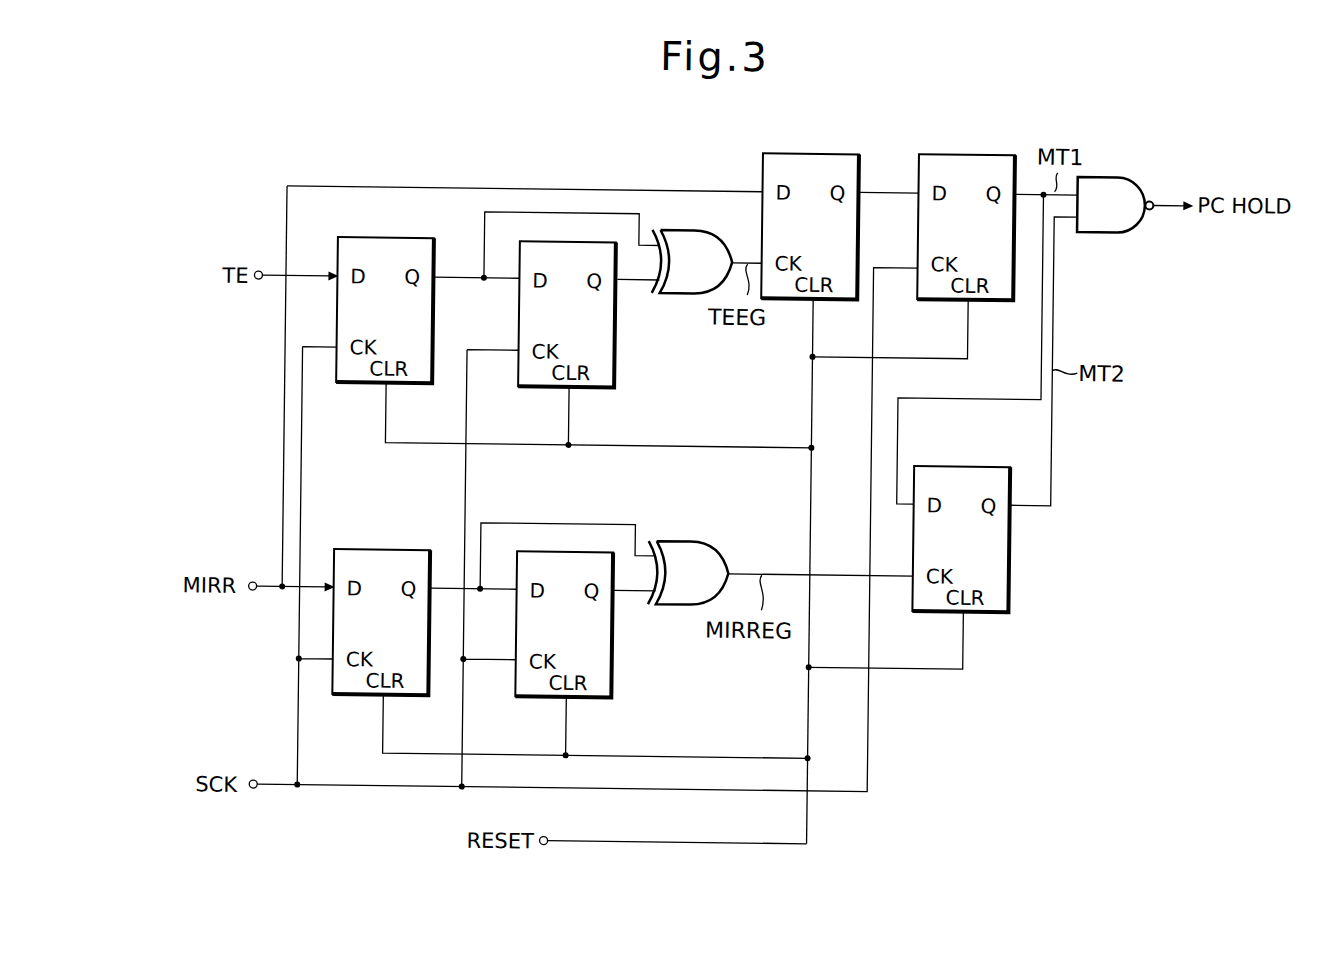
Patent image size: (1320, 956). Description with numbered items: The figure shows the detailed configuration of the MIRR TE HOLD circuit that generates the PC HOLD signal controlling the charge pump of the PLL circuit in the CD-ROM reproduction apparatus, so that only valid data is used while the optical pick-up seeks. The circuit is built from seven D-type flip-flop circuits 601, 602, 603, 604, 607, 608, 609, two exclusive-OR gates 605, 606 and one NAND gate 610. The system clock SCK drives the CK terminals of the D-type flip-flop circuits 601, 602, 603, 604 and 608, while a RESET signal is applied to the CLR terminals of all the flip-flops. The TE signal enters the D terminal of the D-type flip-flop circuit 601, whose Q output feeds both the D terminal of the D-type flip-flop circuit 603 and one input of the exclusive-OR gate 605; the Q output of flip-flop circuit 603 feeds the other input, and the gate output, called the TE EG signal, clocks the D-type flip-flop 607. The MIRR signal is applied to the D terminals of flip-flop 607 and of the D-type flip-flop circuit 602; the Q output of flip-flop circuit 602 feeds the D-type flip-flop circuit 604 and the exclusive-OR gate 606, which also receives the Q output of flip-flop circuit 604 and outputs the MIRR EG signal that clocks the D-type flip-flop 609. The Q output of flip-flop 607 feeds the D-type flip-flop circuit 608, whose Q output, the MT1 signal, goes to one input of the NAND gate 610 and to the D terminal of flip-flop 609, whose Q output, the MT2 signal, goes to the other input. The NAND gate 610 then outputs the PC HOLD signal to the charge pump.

The D-type flip-flop circuit 601 is at (352, 388).
The D-type flip-flop circuit 602 is at (348, 700).
The D-type flip-flop circuit 603 is at (539, 390).
The D-type flip-flop circuit 604 is at (538, 700).
The exclusive-OR gate 605 is at (669, 294).
The exclusive-OR gate 606 is at (688, 541).
The D-type flip-flop 607 is at (817, 151).
The D-type flip-flop circuit 608 is at (974, 150).
The D-type flip-flop 609 is at (977, 462).
The NAND gate 610 is at (1112, 172).